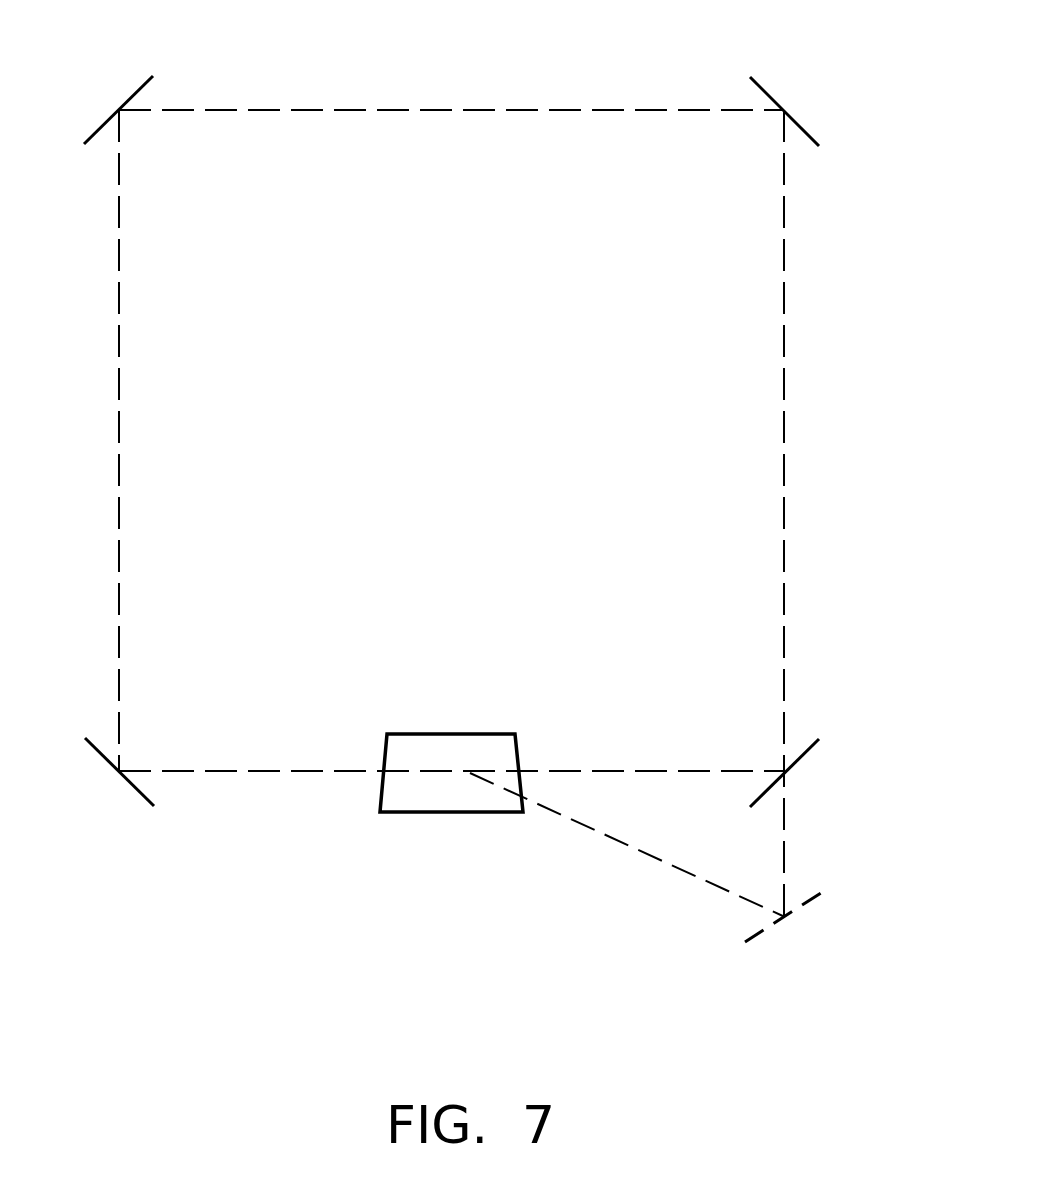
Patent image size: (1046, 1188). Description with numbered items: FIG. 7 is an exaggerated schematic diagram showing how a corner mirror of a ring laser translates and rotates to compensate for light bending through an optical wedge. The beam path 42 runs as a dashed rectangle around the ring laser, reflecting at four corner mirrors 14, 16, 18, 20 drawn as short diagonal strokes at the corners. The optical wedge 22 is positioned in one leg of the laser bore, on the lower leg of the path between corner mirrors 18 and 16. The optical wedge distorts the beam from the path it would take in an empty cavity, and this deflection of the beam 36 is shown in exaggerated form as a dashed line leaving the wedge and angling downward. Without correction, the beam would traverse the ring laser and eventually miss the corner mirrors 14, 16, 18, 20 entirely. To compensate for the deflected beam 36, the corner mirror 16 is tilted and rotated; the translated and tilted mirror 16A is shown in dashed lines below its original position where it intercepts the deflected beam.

The corner mirror 14 is at (767, 93).
The corner mirror 16 is at (803, 760).
The translated and tilted mirror 16A is at (818, 897).
The corner mirror 18 is at (138, 794).
The corner mirror 20 is at (139, 84).
The optical wedge 22 is at (430, 733).
The deflected beam 36 is at (682, 872).
The beam path 42 is at (471, 110).